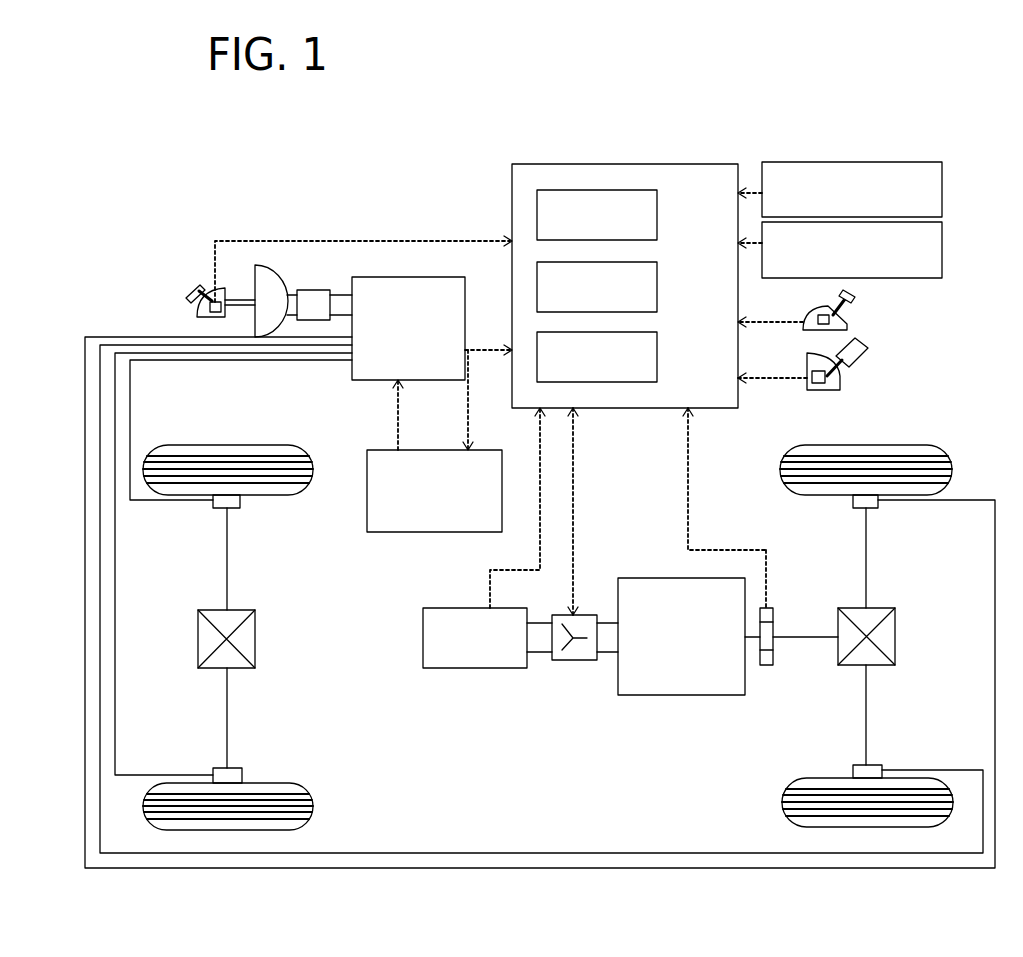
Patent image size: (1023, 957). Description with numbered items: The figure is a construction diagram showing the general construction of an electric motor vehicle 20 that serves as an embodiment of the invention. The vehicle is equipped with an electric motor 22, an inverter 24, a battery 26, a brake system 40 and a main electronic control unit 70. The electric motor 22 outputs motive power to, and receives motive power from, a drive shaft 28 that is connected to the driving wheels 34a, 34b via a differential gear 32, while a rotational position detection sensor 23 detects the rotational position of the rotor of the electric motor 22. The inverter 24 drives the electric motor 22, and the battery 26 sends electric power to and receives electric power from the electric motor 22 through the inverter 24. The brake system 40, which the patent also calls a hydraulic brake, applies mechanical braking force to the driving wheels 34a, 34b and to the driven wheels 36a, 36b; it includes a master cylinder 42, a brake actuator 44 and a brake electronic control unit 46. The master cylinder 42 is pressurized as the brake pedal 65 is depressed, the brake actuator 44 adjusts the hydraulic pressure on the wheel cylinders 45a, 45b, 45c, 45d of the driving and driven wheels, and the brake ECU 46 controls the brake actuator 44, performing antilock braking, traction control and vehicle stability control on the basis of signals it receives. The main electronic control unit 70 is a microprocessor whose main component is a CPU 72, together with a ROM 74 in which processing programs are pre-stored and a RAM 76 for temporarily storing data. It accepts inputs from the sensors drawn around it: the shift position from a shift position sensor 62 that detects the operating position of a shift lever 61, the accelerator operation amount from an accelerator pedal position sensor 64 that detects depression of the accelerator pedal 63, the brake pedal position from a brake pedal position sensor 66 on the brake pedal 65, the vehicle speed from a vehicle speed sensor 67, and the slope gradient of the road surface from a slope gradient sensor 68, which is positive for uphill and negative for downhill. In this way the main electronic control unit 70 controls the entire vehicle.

The electric motor vehicle 20 is at (493, 135).
The electric motor 22 is at (677, 578).
The rotational position detection sensor 23 is at (775, 608).
The inverter 24 is at (583, 660).
The battery 26 is at (488, 668).
The drive shaft 28 is at (812, 637).
The differential gear 32 is at (886, 608).
The driving wheel 34a is at (867, 445).
The driving wheel 34b is at (782, 803).
The driven wheel 36a is at (228, 445).
The driven wheel 36b is at (313, 805).
The brake system 40 is at (438, 274).
The master cylinder 42 is at (327, 290).
The brake actuator 44 is at (367, 380).
The wheel cylinder 45a is at (853, 500).
The wheel cylinder 45b is at (853, 770).
The wheel cylinder 45c is at (241, 500).
The wheel cylinder 45d is at (243, 775).
The brake electronic control unit 46 is at (427, 450).
The shift lever 61 is at (850, 308).
The shift position sensor 62 is at (836, 320).
The accelerator pedal 63 is at (853, 367).
The accelerator pedal position sensor 64 is at (833, 378).
The brake pedal 65 is at (196, 292).
The brake pedal position sensor 66 is at (208, 308).
The vehicle speed sensor 67 is at (942, 192).
The slope gradient sensor 68 is at (942, 244).
The main electronic control unit 70 is at (622, 164).
The CPU 72 is at (657, 215).
The ROM 74 is at (657, 287).
The RAM 76 is at (657, 357).